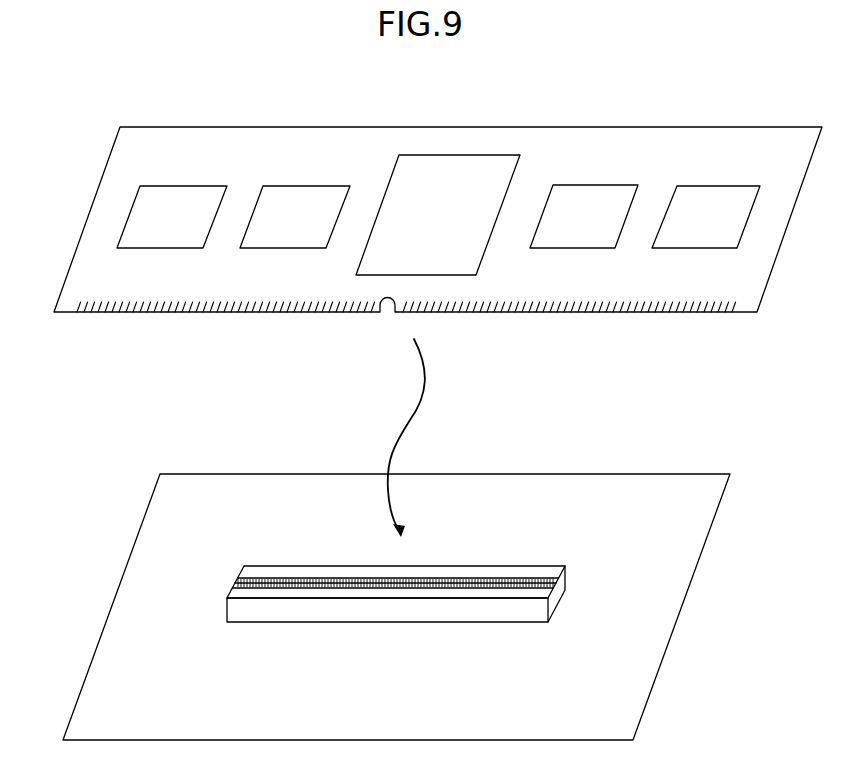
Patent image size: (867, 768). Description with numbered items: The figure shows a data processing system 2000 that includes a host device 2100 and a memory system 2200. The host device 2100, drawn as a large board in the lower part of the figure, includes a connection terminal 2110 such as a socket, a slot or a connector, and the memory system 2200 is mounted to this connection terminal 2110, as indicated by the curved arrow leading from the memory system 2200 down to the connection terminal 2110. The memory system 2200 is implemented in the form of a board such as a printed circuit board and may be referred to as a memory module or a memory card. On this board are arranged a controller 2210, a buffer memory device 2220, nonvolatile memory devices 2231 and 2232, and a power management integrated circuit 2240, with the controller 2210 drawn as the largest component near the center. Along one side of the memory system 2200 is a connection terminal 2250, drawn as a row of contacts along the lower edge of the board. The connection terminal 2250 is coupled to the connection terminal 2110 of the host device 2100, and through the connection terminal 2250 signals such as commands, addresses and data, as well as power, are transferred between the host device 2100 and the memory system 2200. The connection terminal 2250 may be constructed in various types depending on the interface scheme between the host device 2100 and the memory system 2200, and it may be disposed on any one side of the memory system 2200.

The data processing system 2000 is at (22, 86).
The host device 2100 is at (396, 607).
The connection terminal 2110 is at (568, 572).
The memory system 2200 is at (438, 245).
The controller 2210 is at (438, 215).
The buffer memory device 2220 is at (295, 217).
The nonvolatile memory device 2231 is at (584, 216).
The nonvolatile memory device 2232 is at (706, 217).
The power management integrated circuit 2240 is at (172, 217).
The connection terminal 2250 is at (98, 313).